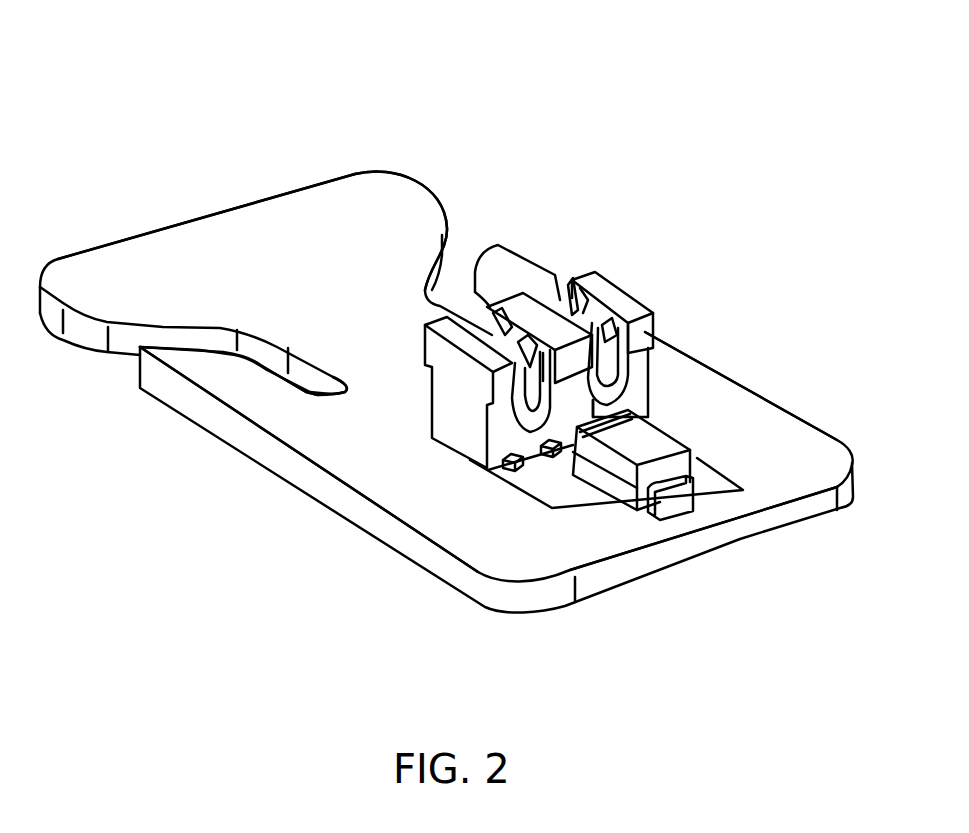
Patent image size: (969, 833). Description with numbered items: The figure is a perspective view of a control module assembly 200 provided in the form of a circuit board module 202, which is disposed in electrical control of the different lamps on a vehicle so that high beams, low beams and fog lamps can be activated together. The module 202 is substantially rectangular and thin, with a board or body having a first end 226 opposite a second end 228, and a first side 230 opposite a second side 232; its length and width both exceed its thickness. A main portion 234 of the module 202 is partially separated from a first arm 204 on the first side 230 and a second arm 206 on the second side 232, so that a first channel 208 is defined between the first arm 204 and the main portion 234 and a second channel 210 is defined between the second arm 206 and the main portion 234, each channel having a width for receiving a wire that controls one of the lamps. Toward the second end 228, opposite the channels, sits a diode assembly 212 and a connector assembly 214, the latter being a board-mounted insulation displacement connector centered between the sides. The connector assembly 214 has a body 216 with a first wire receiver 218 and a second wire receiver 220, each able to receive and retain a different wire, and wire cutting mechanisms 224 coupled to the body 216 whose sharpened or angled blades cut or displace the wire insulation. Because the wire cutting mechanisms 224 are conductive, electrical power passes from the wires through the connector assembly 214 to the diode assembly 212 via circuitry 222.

The control module assembly 200 is at (448, 328).
The circuit board module 202 is at (90, 275).
The first arm 204 is at (213, 377).
The second arm 206 is at (508, 280).
The first channel 208 is at (312, 375).
The second channel 210 is at (569, 336).
The diode assembly 212 is at (680, 465).
The connector assembly 214 is at (624, 270).
The body 216 is at (637, 398).
The first wire receiver 218 is at (480, 325).
The second wire receiver 220 is at (577, 300).
The circuitry 222 is at (560, 477).
The wire cutting mechanisms 224 is at (610, 352).
The first end 226 is at (147, 212).
The second end 228 is at (670, 568).
The first side 230 is at (340, 505).
The second side 232 is at (780, 398).
The main portion 234 is at (375, 328).